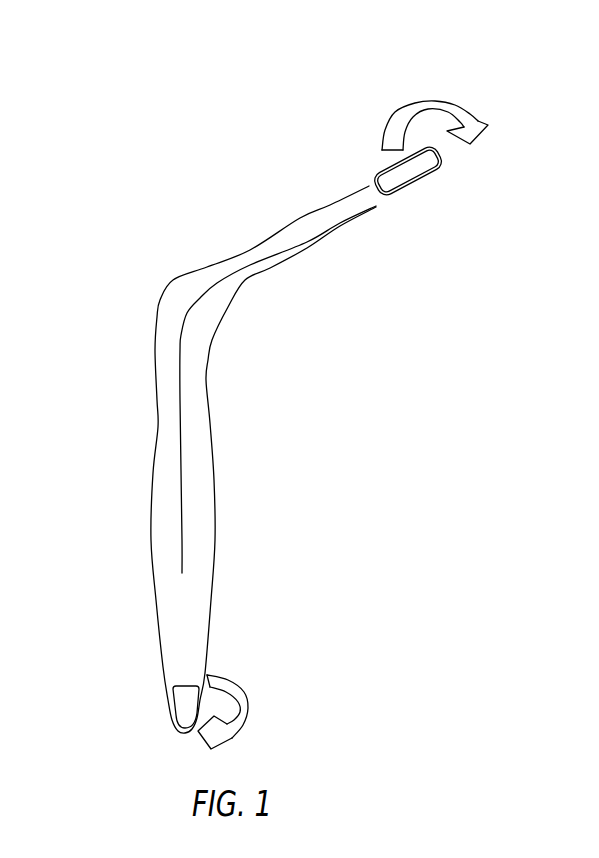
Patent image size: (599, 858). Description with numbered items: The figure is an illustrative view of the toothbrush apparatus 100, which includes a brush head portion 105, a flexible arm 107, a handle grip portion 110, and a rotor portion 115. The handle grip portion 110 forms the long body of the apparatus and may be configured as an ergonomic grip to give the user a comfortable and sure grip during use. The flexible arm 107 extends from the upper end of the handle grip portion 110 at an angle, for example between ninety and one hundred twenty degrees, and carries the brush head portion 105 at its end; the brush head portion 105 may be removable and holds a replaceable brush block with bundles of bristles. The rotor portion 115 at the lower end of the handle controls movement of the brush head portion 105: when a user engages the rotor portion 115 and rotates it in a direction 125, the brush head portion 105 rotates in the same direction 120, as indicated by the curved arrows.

The toothbrush apparatus 100 is at (267, 381).
The brush head portion 105 is at (417, 188).
The flexible arm 107 is at (305, 249).
The handle grip portion 110 is at (158, 427).
The rotor portion 115 is at (163, 667).
The direction 120 is at (403, 102).
The direction 125 is at (240, 728).